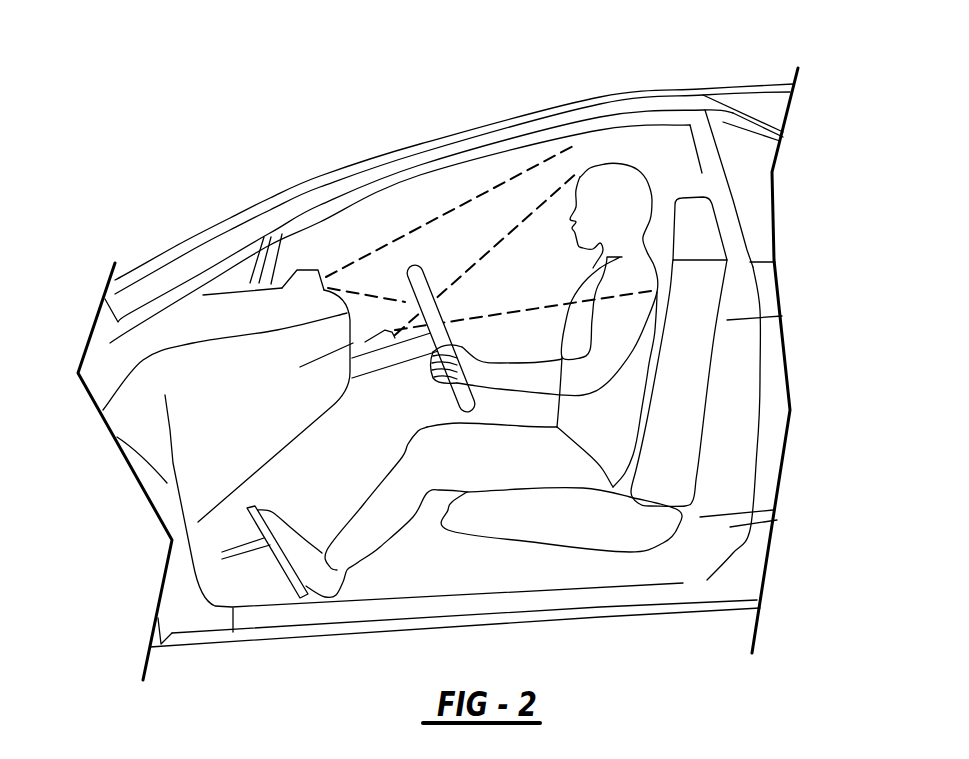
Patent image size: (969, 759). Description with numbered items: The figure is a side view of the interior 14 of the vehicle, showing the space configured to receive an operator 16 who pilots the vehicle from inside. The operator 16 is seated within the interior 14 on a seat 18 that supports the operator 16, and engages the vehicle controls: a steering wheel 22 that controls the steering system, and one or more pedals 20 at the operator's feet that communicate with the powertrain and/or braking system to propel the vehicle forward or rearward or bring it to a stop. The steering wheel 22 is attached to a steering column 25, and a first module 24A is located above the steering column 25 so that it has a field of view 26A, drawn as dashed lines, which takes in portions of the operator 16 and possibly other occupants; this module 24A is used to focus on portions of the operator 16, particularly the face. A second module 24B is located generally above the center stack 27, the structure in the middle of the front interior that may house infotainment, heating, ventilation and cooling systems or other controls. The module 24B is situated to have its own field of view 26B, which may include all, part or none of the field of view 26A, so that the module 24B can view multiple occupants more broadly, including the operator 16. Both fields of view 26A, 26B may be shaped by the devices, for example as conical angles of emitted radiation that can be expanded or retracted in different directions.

The interior 14 is at (382, 220).
The operator 16 is at (609, 190).
The seat 18 is at (690, 380).
The pedals 20 is at (283, 563).
The steering wheel 22 is at (421, 272).
The module 24A is at (350, 345).
The module 24B is at (300, 280).
The steering column 25 is at (397, 355).
The field of view 26A is at (517, 312).
The field of view 26B is at (481, 193).
The center stack 27 is at (102, 396).